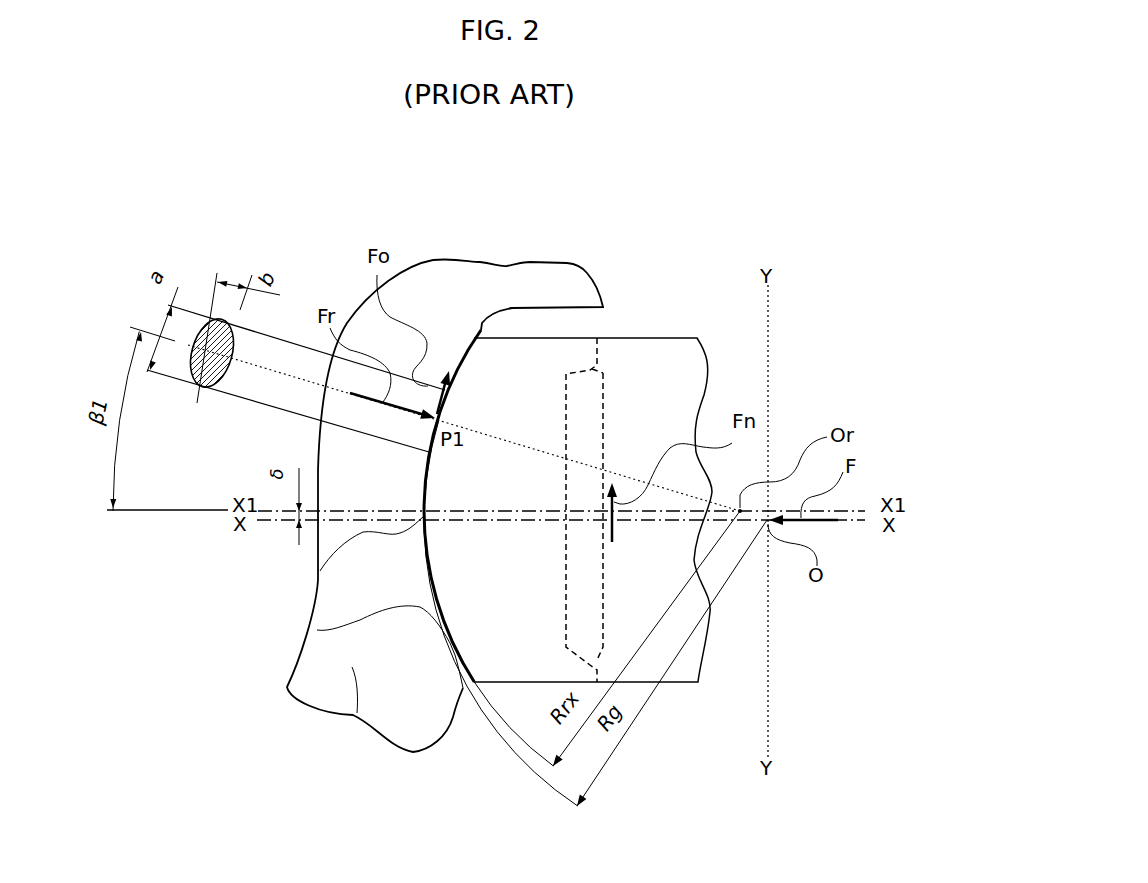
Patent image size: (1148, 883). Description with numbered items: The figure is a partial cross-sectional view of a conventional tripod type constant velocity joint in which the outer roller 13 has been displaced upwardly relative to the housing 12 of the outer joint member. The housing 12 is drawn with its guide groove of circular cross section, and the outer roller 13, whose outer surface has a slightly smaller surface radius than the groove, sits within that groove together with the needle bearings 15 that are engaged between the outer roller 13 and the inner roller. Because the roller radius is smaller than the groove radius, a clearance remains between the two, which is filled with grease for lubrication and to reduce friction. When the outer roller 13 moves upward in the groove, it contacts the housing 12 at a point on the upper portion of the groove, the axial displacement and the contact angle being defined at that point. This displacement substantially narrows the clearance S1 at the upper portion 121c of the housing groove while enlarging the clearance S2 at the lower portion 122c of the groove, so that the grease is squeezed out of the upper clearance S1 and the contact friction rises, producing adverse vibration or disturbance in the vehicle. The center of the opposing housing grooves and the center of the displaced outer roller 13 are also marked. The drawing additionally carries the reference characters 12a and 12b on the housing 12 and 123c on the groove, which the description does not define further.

The housing 12 is at (353, 717).
The upper hook portion of frame 12a is at (525, 308).
The lower end portion of frame 12b is at (433, 703).
The outer roller 13 is at (575, 352).
The needle bearings 15 is at (576, 403).
The upper portion of the housing groove 121c is at (447, 387).
The lower portion of the housing groove 122c is at (317, 630).
The side surface portion 123c is at (320, 577).
The clearance at upper portion of housing groove S1 is at (482, 322).
The clearance at lower portion of housing groove S2 is at (455, 655).